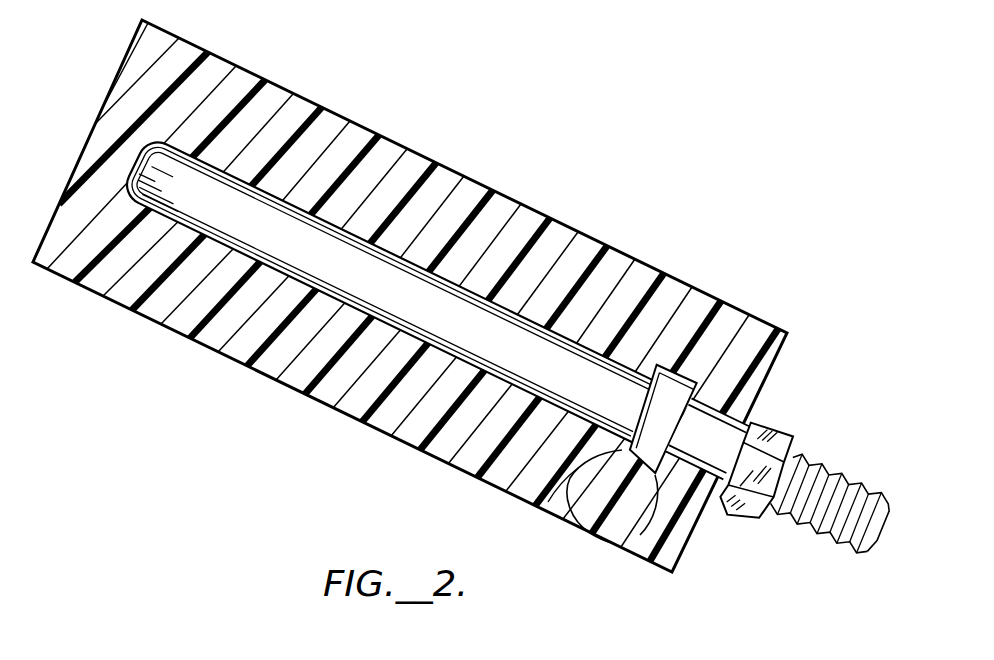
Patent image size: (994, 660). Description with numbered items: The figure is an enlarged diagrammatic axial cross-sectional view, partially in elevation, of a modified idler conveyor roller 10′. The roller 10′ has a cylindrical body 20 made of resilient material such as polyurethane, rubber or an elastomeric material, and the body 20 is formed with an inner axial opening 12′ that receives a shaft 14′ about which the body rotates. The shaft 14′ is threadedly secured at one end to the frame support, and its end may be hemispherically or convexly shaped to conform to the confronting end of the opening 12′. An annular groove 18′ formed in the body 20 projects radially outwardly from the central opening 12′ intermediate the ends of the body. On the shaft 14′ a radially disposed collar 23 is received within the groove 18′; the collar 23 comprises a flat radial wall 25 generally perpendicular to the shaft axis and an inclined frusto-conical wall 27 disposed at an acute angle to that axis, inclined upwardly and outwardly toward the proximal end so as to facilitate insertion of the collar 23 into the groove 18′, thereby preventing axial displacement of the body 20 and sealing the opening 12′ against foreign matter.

The roller 10′ is at (703, 113).
The inner axial opening 12′ is at (442, 280).
The shaft 14′ is at (477, 350).
The annular groove 18′ is at (684, 368).
The cylindrical body 20 is at (345, 116).
The radially disposed collar 23 is at (645, 435).
The flat radial wall 25 is at (614, 542).
The inclined frusto-conical wall 27 is at (548, 502).